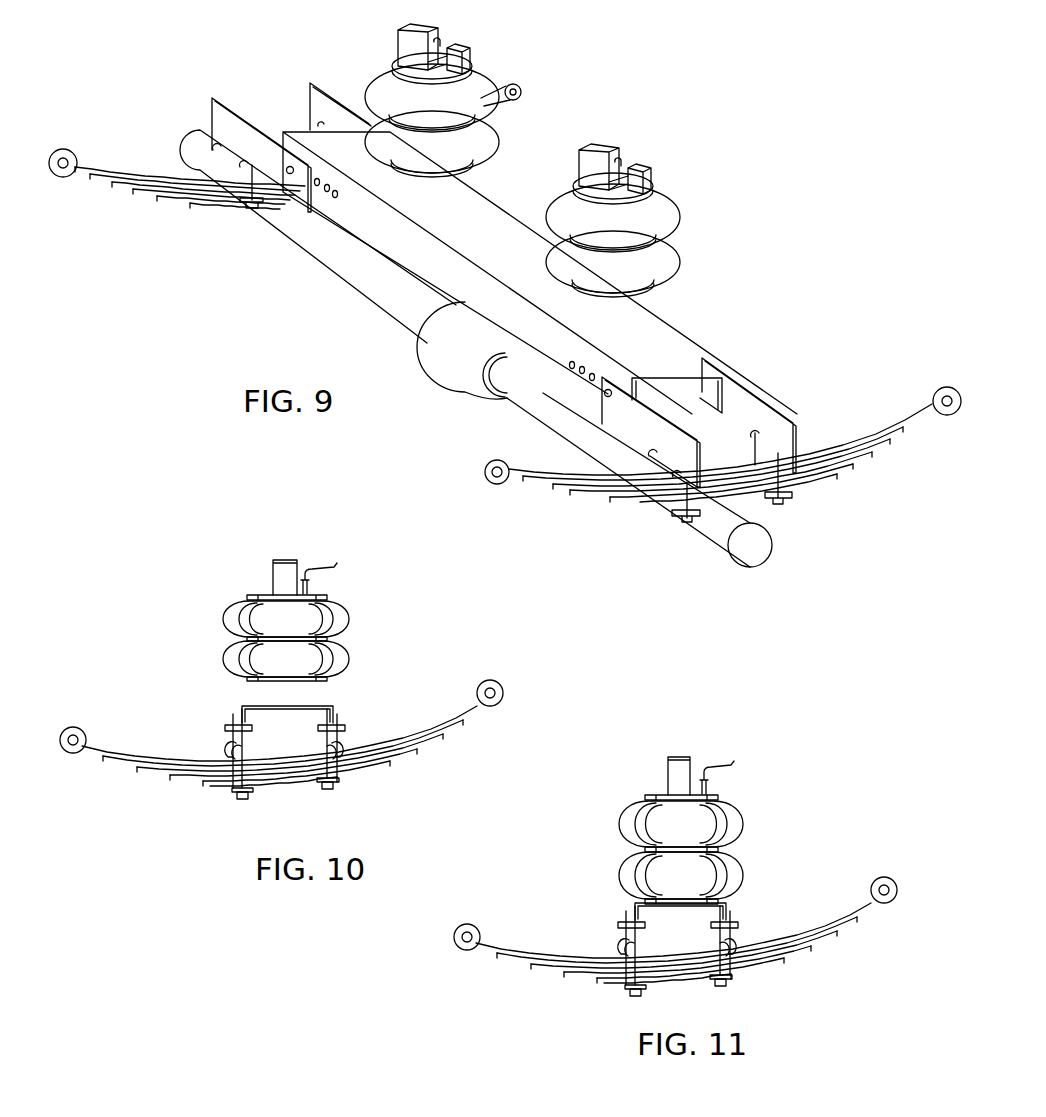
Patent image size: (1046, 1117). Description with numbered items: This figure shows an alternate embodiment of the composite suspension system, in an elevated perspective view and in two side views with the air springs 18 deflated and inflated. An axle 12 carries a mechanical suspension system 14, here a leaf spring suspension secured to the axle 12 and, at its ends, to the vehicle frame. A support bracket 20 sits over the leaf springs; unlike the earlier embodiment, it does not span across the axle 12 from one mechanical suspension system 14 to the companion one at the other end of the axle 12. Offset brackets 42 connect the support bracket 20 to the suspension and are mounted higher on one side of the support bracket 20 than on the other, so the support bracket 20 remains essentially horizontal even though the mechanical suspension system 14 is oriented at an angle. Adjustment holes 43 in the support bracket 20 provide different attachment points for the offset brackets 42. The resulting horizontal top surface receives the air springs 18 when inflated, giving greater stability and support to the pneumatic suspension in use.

In FIG. 9, the axle 12 is at (533, 415).
In FIG. 9, the mechanical suspension system 14 is at (133, 167).
In FIG. 10, the mechanical suspension system 14 is at (400, 755).
In FIG. 11, the mechanical suspension system 14 is at (593, 975).
In FIG. 9, the air spring 18 is at (482, 72).
In FIG. 10, the air spring 18 is at (232, 603).
In FIG. 11, the air spring 18 is at (742, 820).
In FIG. 9, the support bracket 20 is at (502, 215).
In FIG. 10, the support bracket 20 is at (247, 705).
In FIG. 11, the support bracket 20 is at (628, 906).
In FIG. 9, the offset bracket 42 is at (243, 117).
In FIG. 10, the offset bracket 42 is at (230, 742).
In FIG. 11, the offset bracket 42 is at (622, 932).
In FIG. 9, the adjustment holes 43 is at (323, 195).